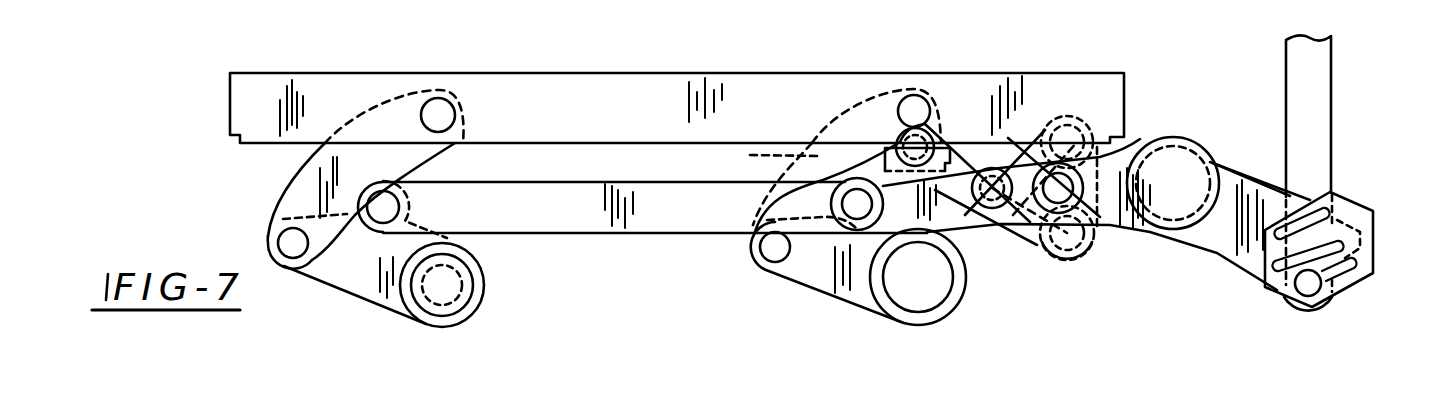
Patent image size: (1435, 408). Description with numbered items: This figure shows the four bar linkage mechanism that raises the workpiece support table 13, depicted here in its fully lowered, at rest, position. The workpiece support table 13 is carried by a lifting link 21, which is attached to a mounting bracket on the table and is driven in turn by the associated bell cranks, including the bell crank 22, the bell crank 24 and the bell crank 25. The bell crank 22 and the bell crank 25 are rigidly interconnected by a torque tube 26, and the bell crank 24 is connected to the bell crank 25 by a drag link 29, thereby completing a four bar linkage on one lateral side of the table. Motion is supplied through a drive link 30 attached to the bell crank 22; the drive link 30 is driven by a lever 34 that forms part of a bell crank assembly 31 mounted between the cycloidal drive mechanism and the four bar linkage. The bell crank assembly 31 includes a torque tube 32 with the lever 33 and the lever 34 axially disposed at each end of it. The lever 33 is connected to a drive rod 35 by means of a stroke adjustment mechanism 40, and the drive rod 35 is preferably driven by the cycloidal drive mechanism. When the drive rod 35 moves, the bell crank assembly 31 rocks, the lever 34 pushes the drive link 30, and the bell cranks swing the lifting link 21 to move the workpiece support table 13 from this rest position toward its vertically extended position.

The workpiece support table 13 is at (633, 73).
The lifting link 21 is at (300, 190).
The bell crank 22 is at (457, 298).
The bell crank 24 is at (334, 285).
The bell crank 25 is at (805, 272).
The torque tube 26 is at (931, 293).
The drag link 29 is at (562, 236).
The drive link 30 is at (982, 227).
The bell crank assembly 31 is at (1180, 112).
The torque tube 32 is at (1185, 199).
The lever 33 is at (1233, 160).
The lever 34 is at (1113, 233).
The drive rod 35 is at (1318, 62).
The stroke adjustment mechanism 40 is at (1371, 187).